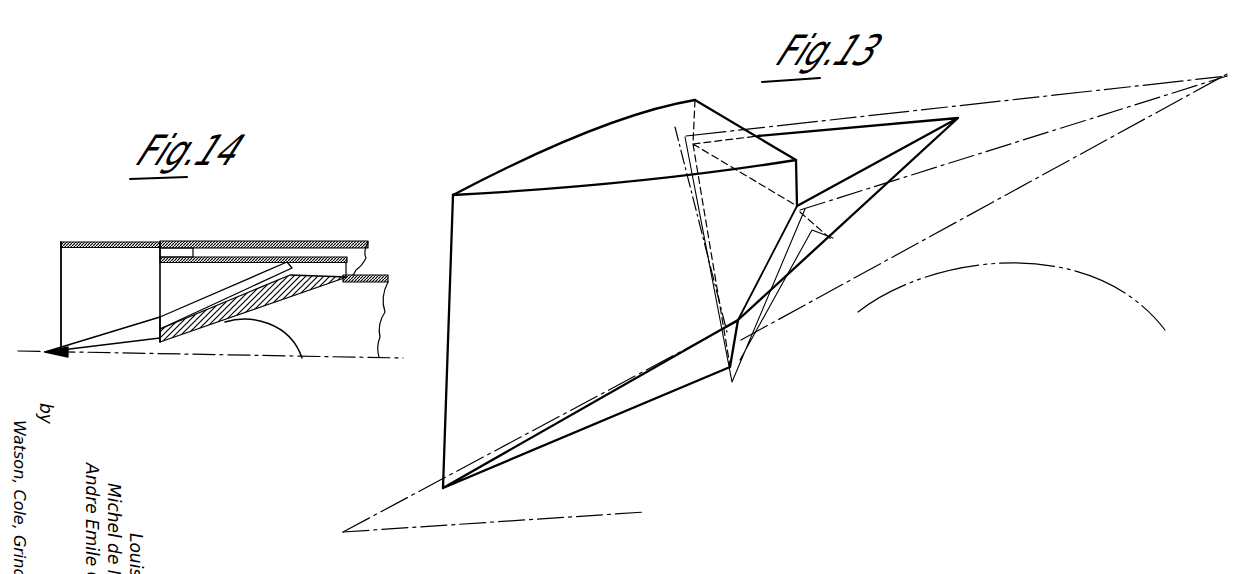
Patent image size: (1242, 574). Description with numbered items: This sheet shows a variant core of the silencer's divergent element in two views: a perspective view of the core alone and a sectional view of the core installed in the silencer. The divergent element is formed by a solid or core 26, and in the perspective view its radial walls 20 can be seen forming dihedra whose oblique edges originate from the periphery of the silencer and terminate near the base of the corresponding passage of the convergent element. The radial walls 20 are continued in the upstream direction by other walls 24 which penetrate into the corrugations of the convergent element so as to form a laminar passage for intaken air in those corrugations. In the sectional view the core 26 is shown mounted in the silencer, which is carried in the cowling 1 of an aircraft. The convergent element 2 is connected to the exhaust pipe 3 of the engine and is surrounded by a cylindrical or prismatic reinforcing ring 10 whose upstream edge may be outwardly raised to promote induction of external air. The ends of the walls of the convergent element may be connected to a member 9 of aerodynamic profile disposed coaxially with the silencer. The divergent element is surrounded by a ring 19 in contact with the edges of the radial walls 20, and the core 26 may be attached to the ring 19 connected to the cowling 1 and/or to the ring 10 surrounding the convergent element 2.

In FIG. 14, the cowling 1 is at (245, 240).
In FIG. 14, the convergent element 2 is at (253, 302).
In FIG. 14, the exhaust pipe 3 is at (334, 280).
In FIG. 14, the member of aerodynamic profile 9 is at (233, 333).
In FIG. 14, the reinforcing ring 10 is at (312, 256).
In FIG. 14, the ring 19 is at (100, 242).
In FIG. 13, the radial walls 20 is at (617, 357).
In FIG. 13, the walls 24 is at (853, 201).
In FIG. 14, the core 26 is at (98, 312).
In FIG. 13, the core 26 is at (493, 350).